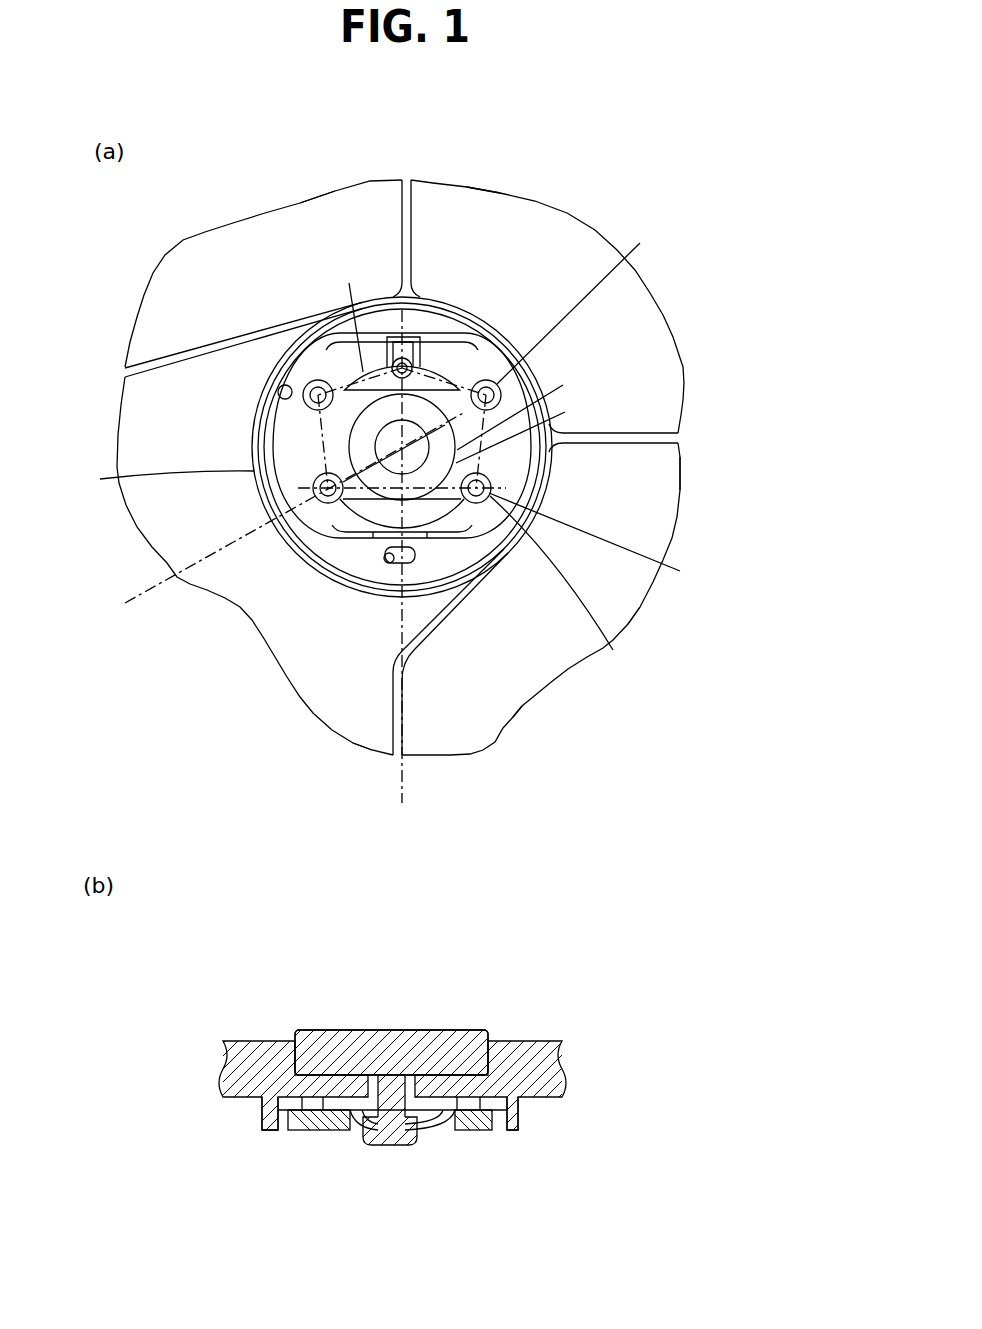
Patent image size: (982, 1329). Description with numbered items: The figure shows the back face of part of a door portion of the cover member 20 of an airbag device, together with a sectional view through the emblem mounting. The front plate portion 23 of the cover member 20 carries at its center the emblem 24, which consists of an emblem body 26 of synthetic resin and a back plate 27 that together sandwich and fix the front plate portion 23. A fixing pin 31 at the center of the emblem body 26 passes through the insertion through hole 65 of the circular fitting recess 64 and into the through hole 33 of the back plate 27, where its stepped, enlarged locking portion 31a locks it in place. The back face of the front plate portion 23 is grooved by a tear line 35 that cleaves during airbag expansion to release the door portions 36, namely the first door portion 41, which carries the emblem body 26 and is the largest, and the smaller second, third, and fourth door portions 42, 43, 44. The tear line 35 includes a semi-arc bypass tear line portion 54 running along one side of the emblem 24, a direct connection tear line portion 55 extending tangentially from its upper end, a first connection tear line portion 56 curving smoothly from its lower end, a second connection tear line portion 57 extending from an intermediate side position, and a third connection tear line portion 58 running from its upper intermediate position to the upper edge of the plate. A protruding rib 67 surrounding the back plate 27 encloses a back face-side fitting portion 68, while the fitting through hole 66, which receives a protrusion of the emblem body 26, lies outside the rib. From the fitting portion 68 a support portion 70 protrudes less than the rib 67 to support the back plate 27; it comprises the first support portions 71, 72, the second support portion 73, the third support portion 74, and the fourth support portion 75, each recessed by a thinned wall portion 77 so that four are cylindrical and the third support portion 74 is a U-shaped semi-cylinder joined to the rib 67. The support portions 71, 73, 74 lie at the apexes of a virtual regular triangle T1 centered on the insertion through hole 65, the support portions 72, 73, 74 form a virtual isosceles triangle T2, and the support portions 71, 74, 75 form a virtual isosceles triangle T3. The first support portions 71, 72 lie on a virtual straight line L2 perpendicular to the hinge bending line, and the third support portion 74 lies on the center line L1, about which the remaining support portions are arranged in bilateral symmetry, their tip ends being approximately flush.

The cover member 20 is at (664, 302).
The front plate portion 23 is at (574, 220).
The emblem 24 is at (413, 1022).
The emblem body 26 is at (463, 1043).
The back plate 27 is at (460, 1131).
The fixing pin 31 is at (390, 1145).
The locking portion 31a is at (400, 1140).
The through hole 33 is at (385, 1126).
The tear line 35 is at (679, 461).
The door portions 36 is at (637, 603).
The first door portion 41 is at (358, 738).
The second door portion 42 is at (527, 690).
The third door portion 43 is at (478, 200).
The fourth door portion 44 is at (311, 206).
The bypass tear line portion 54 is at (478, 314).
The direct connection tear line portion 55 is at (183, 351).
The first connection tear line portion 56 is at (404, 723).
The second connection tear line portion 57 is at (621, 433).
The third connection tear line portion 58 is at (412, 222).
The fitting recess 64 is at (461, 560).
The insertion through hole 65 is at (343, 507).
The fitting through hole 66 is at (386, 557).
The protruding rib 67 is at (450, 334).
The back face-side fitting portion 68 is at (279, 390).
The support portion 70 is at (614, 652).
The first support portion 71 is at (162, 477).
The first support portion 72 is at (580, 303).
The second support portion 73 is at (598, 537).
The third support portion 74 is at (388, 372).
The fourth support portion 75 is at (317, 383).
The thinned wall portion 77 is at (406, 358).
The center line L1 is at (404, 780).
The virtual straight line L2 is at (141, 607).
The virtual regular triangle T1 is at (524, 429).
The virtual isosceles triangle T2 is at (523, 409).
The virtual isosceles triangle T3 is at (346, 316).